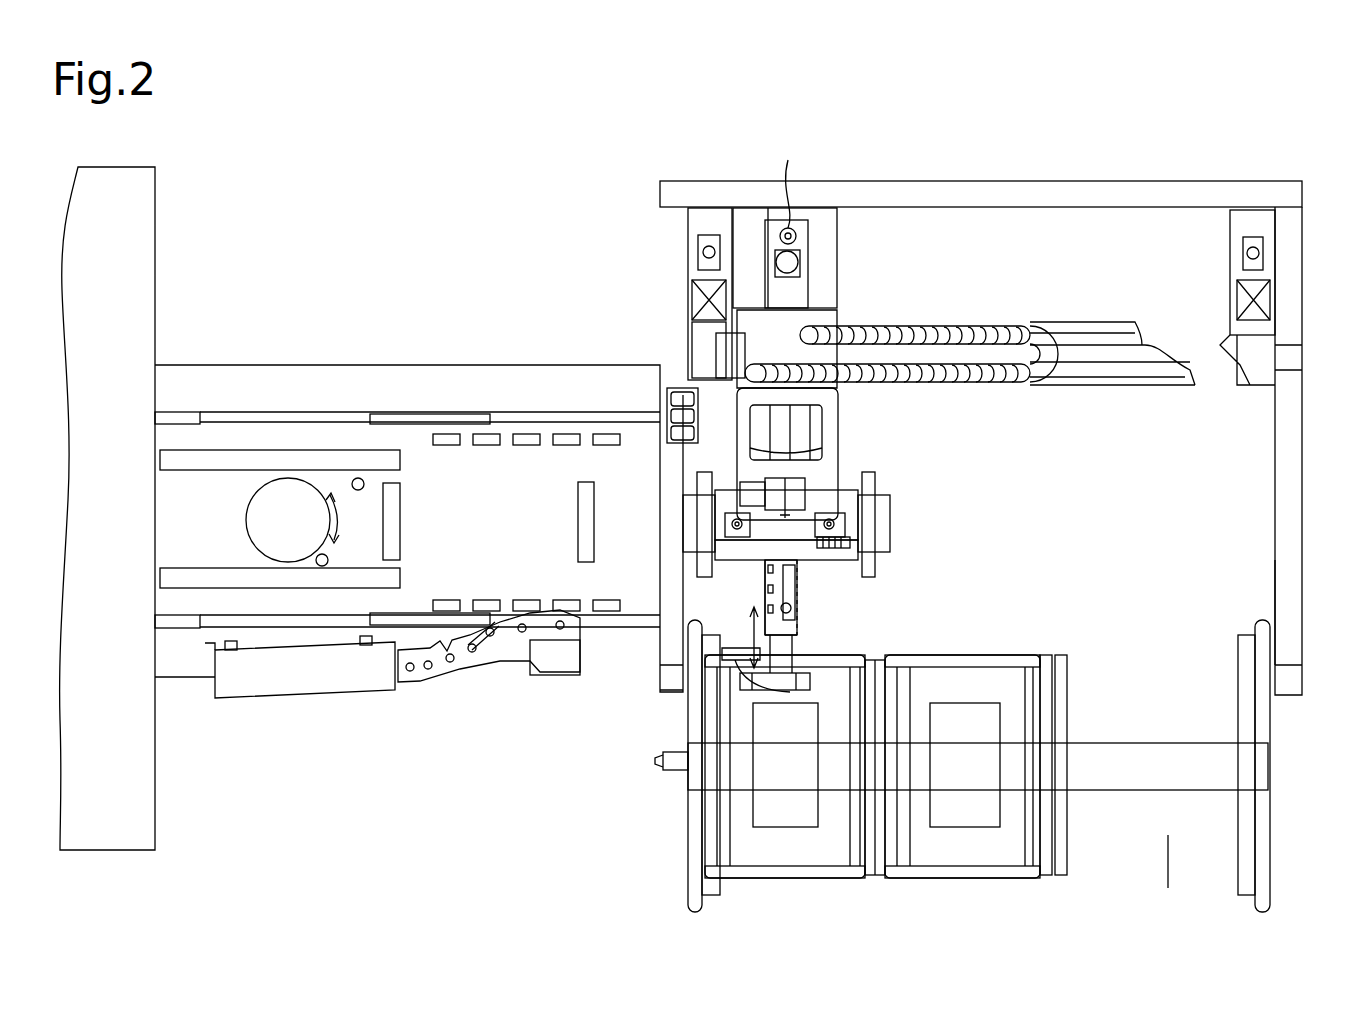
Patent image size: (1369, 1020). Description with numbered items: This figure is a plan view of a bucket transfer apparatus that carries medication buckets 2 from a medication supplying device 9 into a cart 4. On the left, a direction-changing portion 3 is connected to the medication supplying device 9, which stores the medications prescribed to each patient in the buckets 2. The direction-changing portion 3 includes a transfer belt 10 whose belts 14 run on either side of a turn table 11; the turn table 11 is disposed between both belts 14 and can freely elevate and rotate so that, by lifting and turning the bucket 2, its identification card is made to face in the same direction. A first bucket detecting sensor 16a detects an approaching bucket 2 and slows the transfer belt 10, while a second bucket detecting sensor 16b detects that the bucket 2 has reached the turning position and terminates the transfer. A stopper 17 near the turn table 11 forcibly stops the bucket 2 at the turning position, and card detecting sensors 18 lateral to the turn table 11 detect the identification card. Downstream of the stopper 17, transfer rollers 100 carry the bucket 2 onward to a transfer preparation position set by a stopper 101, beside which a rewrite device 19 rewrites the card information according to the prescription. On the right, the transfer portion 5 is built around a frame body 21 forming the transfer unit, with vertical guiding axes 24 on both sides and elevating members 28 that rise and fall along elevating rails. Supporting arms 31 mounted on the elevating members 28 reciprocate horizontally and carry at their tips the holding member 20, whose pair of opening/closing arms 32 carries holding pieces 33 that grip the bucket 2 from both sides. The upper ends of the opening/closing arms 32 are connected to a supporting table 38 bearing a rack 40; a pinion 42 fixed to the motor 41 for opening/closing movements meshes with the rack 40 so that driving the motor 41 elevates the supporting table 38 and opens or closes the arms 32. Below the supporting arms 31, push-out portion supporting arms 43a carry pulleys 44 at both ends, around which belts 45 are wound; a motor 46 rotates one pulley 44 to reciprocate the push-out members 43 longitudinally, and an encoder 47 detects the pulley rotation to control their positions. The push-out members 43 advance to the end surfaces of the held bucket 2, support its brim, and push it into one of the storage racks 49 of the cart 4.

The bucket 2 is at (1020, 655).
The direction-changing portion 3 is at (430, 265).
The cart 4 is at (1174, 848).
The transfer portion 5 is at (1305, 456).
The medication supplying device 9 is at (155, 838).
The transfer belt 10 is at (243, 452).
The turn table 11 is at (300, 482).
The belts 14 is at (193, 468).
The first bucket detecting sensor 16a is at (328, 560).
The second bucket detecting sensor 16b is at (362, 489).
The stopper 17 is at (400, 497).
The card detecting sensors 18 is at (365, 645).
The rewrite device 19 is at (552, 672).
The holding member 20 is at (908, 484).
The frame body 21 is at (1272, 181).
The guiding axes 24 is at (698, 250).
The elevating members 28 is at (972, 318).
The supporting arms 31 is at (838, 398).
The opening/closing arms 32 is at (700, 506).
The holding pieces 33 is at (700, 566).
The supporting table 38 is at (758, 550).
The rack 40 is at (832, 528).
The motor for opening/closing movements 41 is at (750, 488).
The pinion 42 is at (790, 490).
The push-out members 43 is at (805, 660).
The push-out portion supporting arms 43a is at (760, 600).
The pulleys 44 is at (912, 620).
The belts 45 is at (798, 612).
The motor 46 is at (800, 262).
The encoder 47 is at (798, 236).
The storage racks 49 is at (1067, 855).
The transfer rollers 100 is at (485, 438).
The stopper 101 is at (587, 482).